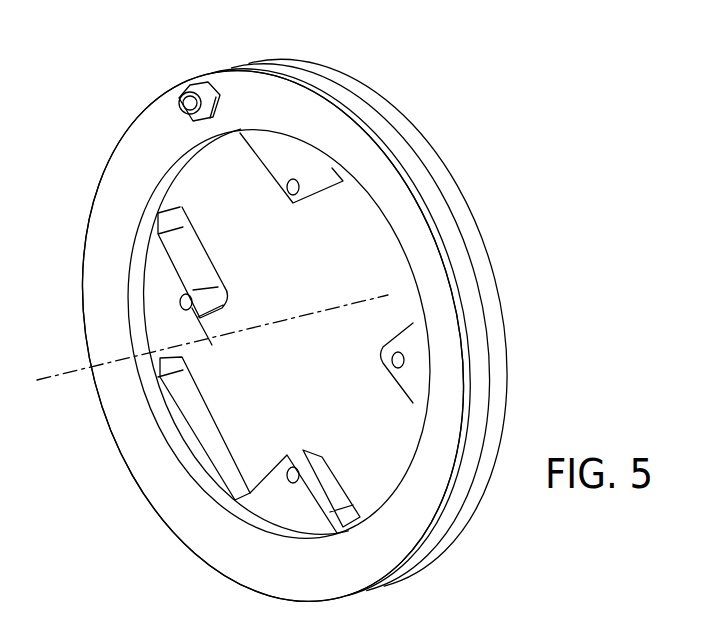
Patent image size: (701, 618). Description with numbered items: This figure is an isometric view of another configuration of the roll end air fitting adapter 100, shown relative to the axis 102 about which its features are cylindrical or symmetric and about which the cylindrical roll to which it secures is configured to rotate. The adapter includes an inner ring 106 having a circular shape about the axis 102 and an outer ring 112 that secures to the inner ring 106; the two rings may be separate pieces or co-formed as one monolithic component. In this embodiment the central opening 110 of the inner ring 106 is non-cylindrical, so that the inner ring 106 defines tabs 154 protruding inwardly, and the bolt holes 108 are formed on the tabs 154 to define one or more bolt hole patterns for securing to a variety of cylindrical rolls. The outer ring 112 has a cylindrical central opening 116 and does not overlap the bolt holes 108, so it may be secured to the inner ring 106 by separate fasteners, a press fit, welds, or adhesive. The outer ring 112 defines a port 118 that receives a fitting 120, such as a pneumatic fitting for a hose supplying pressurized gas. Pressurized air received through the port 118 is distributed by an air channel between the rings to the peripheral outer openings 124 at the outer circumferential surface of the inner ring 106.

The roll end air fitting adapter 100 is at (497, 104).
The axis 102 is at (60, 378).
The inner ring 106 is at (370, 95).
The bolt holes 108 is at (293, 205).
The central opening 110 is at (205, 278).
The outer ring 112 is at (112, 210).
The central opening 116 is at (173, 444).
The port 118 is at (214, 88).
The fitting 120 is at (179, 106).
The peripheral outer openings 124 is at (304, 63).
The tabs 154 is at (268, 150).